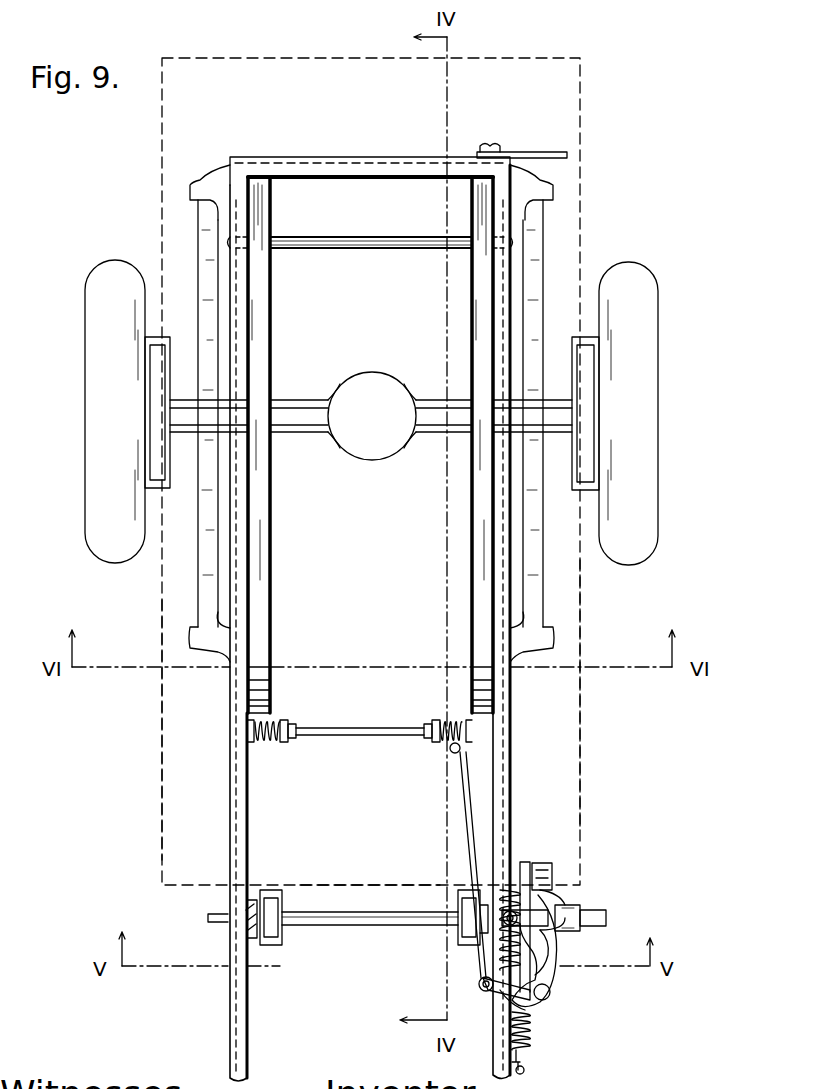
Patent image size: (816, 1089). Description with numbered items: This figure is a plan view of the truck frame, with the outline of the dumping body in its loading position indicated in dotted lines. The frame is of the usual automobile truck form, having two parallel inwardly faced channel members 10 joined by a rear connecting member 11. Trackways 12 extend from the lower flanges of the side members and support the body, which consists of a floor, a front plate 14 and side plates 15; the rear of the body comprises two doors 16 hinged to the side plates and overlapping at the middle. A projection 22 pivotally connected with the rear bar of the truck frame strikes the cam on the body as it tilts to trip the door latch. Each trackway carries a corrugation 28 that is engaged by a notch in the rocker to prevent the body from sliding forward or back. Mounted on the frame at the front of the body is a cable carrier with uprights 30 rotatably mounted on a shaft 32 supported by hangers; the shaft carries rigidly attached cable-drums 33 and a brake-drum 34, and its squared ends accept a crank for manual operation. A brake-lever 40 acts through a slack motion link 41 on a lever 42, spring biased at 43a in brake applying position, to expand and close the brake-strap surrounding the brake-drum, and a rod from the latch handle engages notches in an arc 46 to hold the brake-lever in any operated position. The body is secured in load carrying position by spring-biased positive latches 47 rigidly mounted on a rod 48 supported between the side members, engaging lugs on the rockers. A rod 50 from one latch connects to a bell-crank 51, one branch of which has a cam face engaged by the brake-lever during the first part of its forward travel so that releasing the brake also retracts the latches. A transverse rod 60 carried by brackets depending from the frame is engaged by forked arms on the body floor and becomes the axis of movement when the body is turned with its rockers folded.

The door 16 is at (255, 58).
The side plate 15 is at (162, 766).
The front plate 14 is at (362, 884).
The rear connecting member 11 is at (306, 158).
The channel member 10 is at (230, 797).
The trackway 12 is at (268, 300).
The transverse rod 60 is at (430, 249).
The projection 22 is at (556, 152).
The corrugation 28 is at (270, 693).
The positive latch 47 is at (284, 742).
The rod 48 is at (372, 738).
The rod 50 is at (467, 812).
The shaft 32 is at (340, 926).
The cable-drum 33 is at (276, 890).
The upright 30 is at (253, 932).
The arc 46 is at (528, 880).
The brake-drum 34 is at (554, 866).
The slack motion link 41 is at (566, 896).
The brake-lever 40 is at (584, 912).
The bell-crank 51 is at (552, 935).
The lever 42 is at (548, 982).
The spring 43a is at (545, 1040).